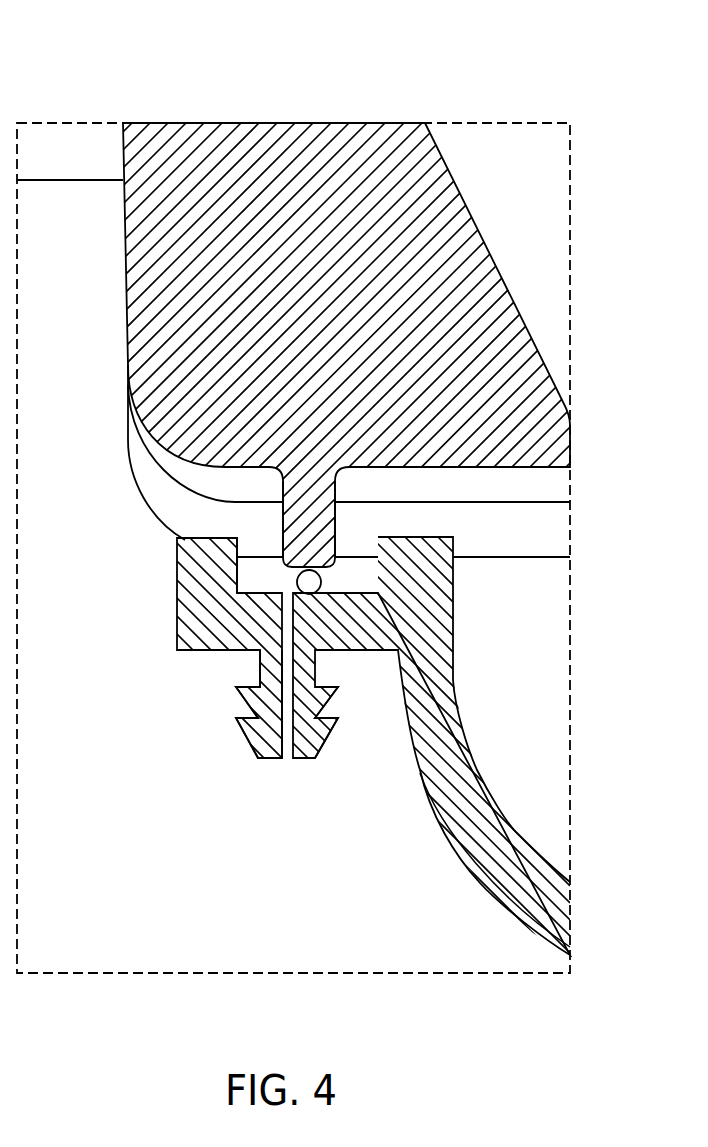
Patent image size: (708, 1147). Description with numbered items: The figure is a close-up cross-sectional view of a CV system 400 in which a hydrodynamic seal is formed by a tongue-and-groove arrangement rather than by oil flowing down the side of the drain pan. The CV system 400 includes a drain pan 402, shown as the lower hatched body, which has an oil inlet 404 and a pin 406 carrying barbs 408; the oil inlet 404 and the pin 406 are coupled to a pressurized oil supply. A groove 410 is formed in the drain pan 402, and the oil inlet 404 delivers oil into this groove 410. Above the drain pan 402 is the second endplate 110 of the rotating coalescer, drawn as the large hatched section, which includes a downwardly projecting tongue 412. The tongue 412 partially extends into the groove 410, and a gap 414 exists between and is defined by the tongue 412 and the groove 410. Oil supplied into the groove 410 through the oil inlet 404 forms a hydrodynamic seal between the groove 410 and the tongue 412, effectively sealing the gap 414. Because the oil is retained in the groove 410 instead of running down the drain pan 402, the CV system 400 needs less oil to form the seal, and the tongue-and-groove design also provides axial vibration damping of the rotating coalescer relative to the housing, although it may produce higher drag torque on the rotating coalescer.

The CV system 400 is at (98, 77).
The second endplate 110 is at (488, 317).
The tongue 412 is at (322, 518).
The groove 410 is at (255, 568).
The oil inlet 404 is at (288, 609).
The pin 406 is at (263, 662).
The drain pan 402 is at (452, 750).
The barbs 408 is at (313, 740).
The gap 414 is at (320, 582).